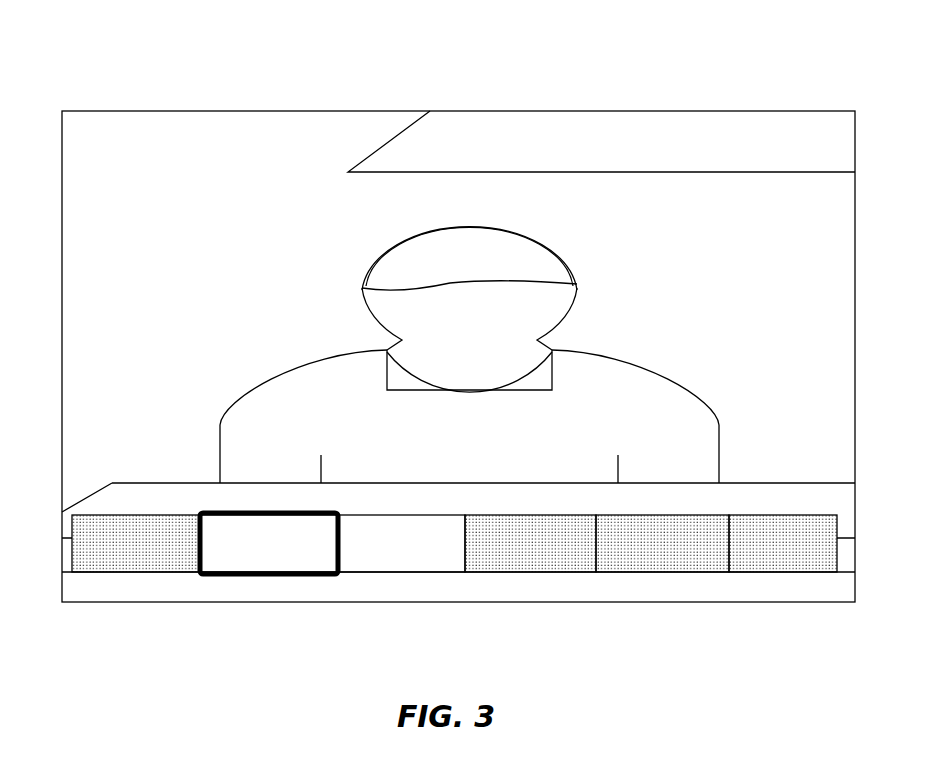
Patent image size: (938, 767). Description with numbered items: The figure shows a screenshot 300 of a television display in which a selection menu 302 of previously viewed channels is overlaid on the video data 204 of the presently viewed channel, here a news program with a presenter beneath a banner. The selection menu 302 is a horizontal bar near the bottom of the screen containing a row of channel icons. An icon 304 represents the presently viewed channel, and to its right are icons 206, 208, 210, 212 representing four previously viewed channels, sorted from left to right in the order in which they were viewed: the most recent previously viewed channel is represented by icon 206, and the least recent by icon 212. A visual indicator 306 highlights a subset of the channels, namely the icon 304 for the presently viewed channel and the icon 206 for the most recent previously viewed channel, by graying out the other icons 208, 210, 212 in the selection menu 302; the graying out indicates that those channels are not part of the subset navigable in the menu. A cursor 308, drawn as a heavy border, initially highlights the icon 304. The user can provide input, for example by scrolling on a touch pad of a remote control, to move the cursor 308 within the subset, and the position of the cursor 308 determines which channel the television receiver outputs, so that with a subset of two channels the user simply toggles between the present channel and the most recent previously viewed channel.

The screenshot 300 is at (720, 88).
The video data 204 is at (80, 276).
The selection menu 302 is at (175, 586).
The icon representing a presently viewed channel 304 is at (260, 577).
The visual indicator 306 is at (80, 540).
The cursor 308 is at (277, 500).
The icon 206 is at (400, 572).
The icon 208 is at (538, 572).
The icon 210 is at (665, 572).
The icon 212 is at (790, 572).